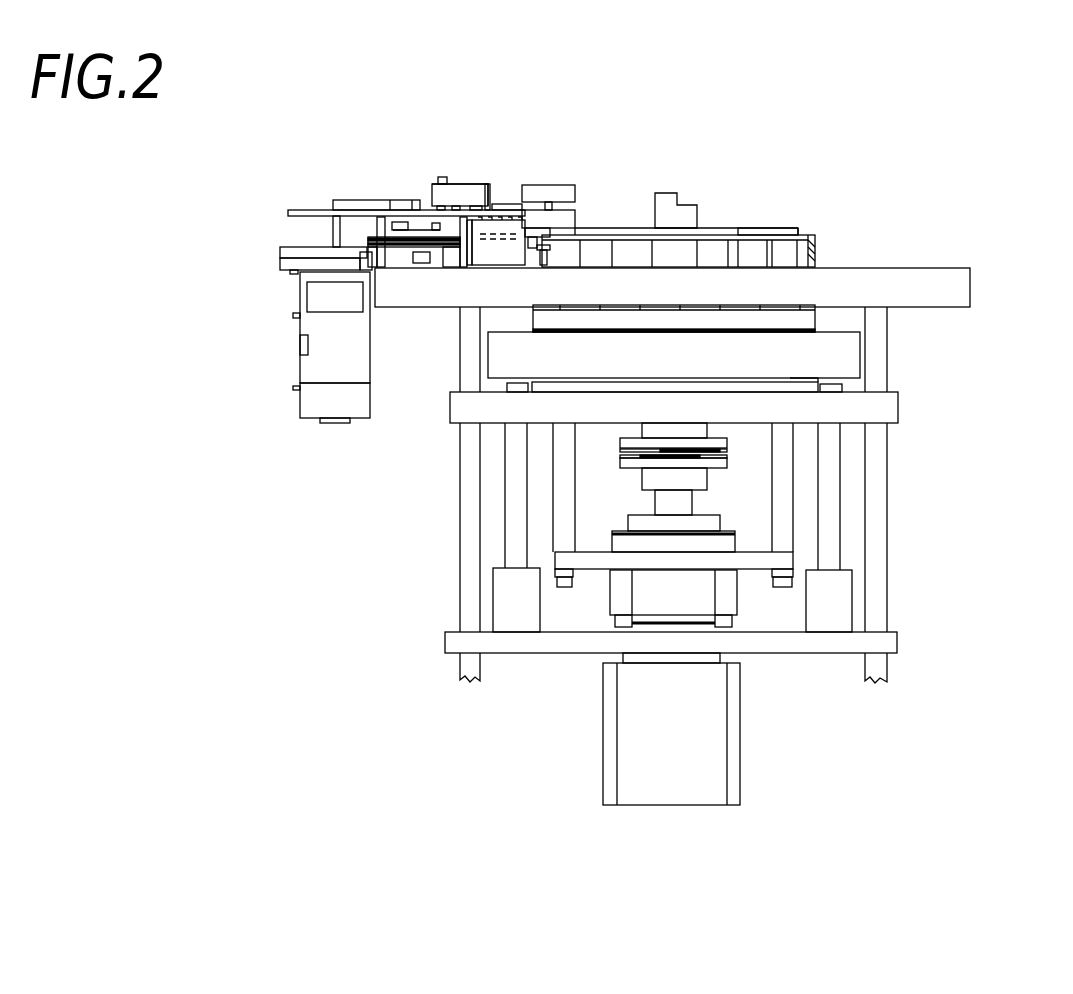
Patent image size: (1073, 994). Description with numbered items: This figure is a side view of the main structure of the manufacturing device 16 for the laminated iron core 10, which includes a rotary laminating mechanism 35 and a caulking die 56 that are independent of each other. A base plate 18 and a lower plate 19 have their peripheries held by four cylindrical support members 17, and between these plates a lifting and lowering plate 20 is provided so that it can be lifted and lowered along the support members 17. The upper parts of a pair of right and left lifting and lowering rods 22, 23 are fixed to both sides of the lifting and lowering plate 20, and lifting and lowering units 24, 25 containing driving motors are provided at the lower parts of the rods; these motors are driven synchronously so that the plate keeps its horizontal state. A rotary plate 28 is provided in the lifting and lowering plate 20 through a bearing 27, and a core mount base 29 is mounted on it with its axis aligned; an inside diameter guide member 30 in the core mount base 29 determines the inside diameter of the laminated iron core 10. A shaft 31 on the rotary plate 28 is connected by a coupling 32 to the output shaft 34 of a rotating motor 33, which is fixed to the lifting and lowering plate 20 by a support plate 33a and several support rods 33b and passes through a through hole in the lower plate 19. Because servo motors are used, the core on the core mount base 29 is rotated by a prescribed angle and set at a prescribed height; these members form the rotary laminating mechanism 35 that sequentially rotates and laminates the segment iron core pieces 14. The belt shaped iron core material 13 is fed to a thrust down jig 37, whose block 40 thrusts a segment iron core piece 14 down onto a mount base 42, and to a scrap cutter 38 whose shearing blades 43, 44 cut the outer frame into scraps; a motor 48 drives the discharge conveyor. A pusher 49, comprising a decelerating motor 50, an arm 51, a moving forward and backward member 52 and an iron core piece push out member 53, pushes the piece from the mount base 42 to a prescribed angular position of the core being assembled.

The laminated iron core 10 is at (693, 193).
The belt shaped iron core material 13 is at (283, 210).
The segment iron core piece 14 is at (410, 225).
The manufacturing device for the laminated iron core 16 is at (697, 242).
The cylindrical support member 17 is at (472, 537).
The base plate 18 is at (945, 287).
The lower plate 19 is at (843, 645).
The lifting and lowering plate 20 is at (467, 410).
The lifting and lowering rod 22 is at (517, 550).
The lifting and lowering rod 23 is at (832, 558).
The lifting and lowering unit 24 is at (482, 614).
The lifting and lowering unit 25 is at (866, 619).
The bearing 27 is at (765, 390).
The rotary plate 28 is at (720, 357).
The core mount base 29 is at (627, 317).
The inside diameter guide member 30 is at (780, 220).
The shaft 31 is at (680, 217).
The coupling 32 is at (747, 451).
The rotating motor 33 is at (597, 609).
The support plate 33a is at (753, 562).
The support rod 33b is at (565, 477).
The output shaft 34 is at (668, 503).
The rotary laminating mechanism 35 is at (607, 222).
The thrust down jig 37 is at (437, 187).
The scrap cutter 38 is at (491, 175).
The block 40 is at (460, 190).
The mount base 42 is at (447, 245).
The shearing blade 43 is at (495, 210).
The shearing blade 44 is at (492, 215).
The motor 48 is at (345, 205).
The pusher 49 is at (283, 354).
The decelerating motor 50 is at (308, 370).
The arm 51 is at (313, 260).
The moving forward and backward member 52 is at (313, 248).
The iron core piece push out member 53 is at (397, 225).
The caulking die 56 is at (575, 180).